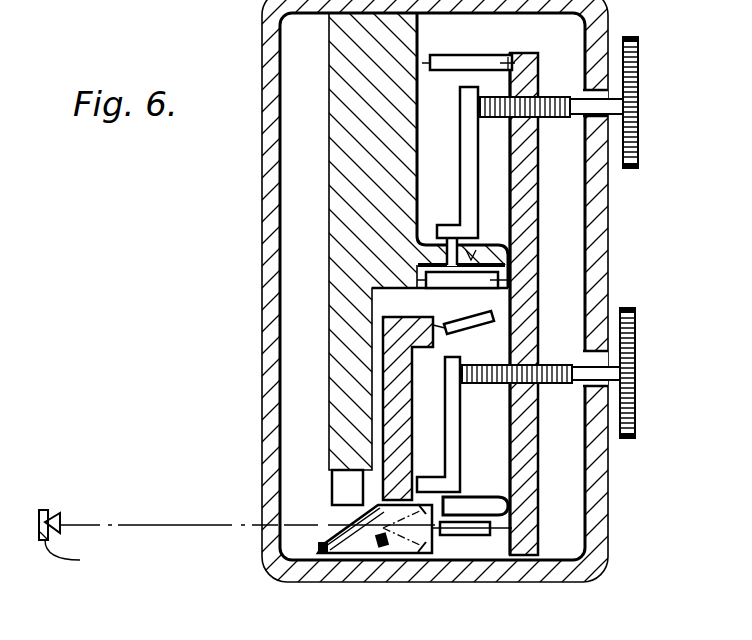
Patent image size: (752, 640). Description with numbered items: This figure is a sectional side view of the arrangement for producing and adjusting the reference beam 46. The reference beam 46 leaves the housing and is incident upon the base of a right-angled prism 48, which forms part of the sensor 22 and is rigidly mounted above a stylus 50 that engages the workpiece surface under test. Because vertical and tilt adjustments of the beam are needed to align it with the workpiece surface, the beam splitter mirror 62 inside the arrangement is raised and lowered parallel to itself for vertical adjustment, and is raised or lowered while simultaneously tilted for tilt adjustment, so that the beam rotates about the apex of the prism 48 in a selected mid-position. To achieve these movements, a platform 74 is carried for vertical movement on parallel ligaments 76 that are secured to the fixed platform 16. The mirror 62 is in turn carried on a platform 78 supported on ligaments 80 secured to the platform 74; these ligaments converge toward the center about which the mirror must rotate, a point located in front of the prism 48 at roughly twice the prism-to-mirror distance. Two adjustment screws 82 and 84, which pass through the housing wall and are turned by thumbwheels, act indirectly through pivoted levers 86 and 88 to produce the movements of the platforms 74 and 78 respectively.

The platform 16 is at (270, 38).
The sensor 22 is at (50, 504).
The reference beam 46 is at (162, 523).
The right-angled prism 48 is at (62, 514).
The stylus 50 is at (78, 559).
The beam splitter mirror 62 is at (352, 545).
The platform 74 is at (533, 192).
The parallel ligaments 76 is at (468, 32).
The platform 78 is at (388, 434).
The ligaments 80 is at (477, 317).
The adjustment screw 82 is at (640, 88).
The adjustment screw 84 is at (637, 343).
The pivoted lever 86 is at (465, 163).
The pivoted lever 88 is at (450, 465).